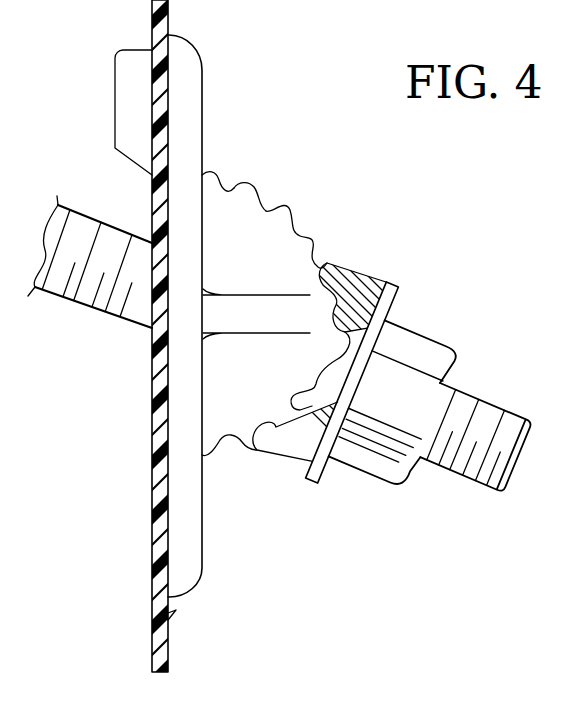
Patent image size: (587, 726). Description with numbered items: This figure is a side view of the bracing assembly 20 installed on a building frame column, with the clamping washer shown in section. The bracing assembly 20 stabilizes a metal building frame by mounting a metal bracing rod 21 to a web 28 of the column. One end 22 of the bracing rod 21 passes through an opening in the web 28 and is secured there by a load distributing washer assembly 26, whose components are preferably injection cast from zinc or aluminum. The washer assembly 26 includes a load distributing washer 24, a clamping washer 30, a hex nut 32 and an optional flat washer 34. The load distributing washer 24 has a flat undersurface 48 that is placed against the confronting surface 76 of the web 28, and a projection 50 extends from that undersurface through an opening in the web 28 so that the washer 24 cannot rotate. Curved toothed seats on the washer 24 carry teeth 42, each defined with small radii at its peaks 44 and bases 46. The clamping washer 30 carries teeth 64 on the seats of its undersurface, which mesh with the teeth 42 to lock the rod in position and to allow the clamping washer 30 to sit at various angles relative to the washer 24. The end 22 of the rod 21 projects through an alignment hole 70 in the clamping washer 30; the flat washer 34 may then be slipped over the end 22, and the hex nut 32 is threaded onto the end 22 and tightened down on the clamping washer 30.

The bracing assembly 20 is at (193, 593).
The bracing rod 21 is at (149, 337).
The end of bracing rod 22 is at (91, 221).
The load distributing washer 24 is at (203, 72).
The washer assembly 26 is at (355, 263).
The web 28 is at (148, 647).
The clamping washer 30 is at (366, 281).
The hex nut 32 is at (447, 343).
The flat washer 34 is at (400, 293).
The teeth 42 is at (312, 230).
The peaks 44 is at (256, 185).
The bases 46 is at (228, 192).
The flat undersurface 48 is at (160, 558).
The projection 50 is at (115, 70).
The teeth 64 is at (266, 450).
The alignment hole 70 is at (302, 460).
The confronting surface 76 is at (160, 616).